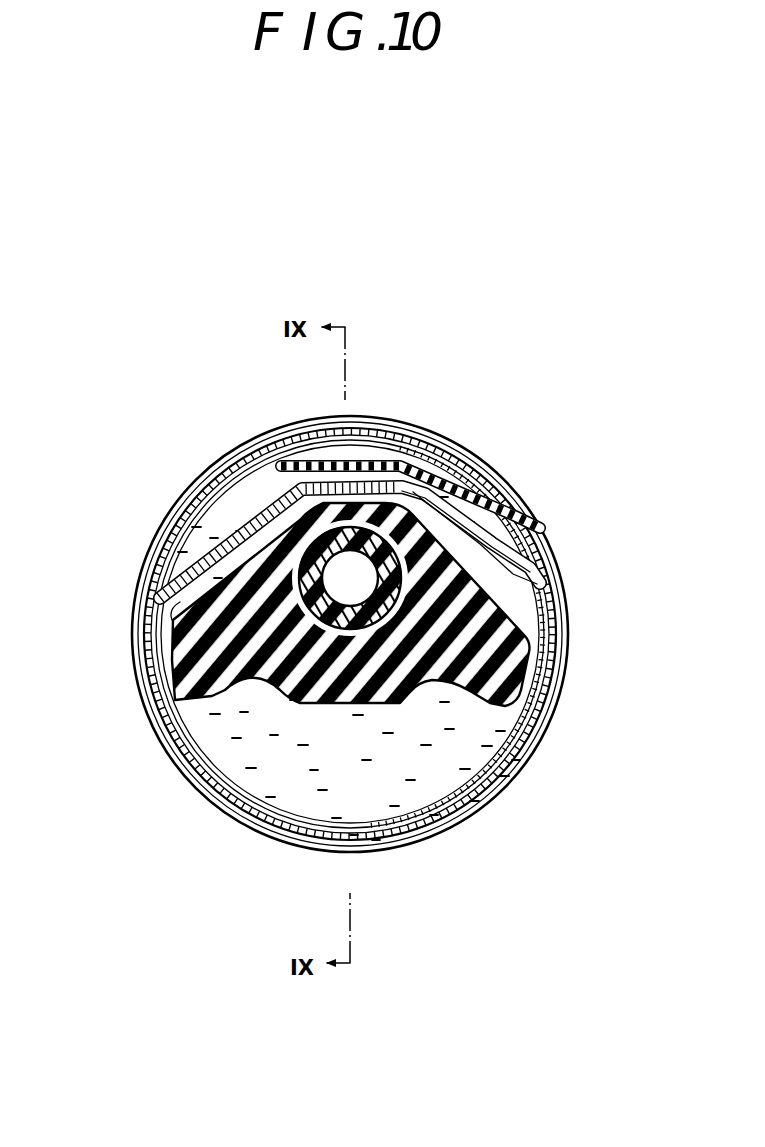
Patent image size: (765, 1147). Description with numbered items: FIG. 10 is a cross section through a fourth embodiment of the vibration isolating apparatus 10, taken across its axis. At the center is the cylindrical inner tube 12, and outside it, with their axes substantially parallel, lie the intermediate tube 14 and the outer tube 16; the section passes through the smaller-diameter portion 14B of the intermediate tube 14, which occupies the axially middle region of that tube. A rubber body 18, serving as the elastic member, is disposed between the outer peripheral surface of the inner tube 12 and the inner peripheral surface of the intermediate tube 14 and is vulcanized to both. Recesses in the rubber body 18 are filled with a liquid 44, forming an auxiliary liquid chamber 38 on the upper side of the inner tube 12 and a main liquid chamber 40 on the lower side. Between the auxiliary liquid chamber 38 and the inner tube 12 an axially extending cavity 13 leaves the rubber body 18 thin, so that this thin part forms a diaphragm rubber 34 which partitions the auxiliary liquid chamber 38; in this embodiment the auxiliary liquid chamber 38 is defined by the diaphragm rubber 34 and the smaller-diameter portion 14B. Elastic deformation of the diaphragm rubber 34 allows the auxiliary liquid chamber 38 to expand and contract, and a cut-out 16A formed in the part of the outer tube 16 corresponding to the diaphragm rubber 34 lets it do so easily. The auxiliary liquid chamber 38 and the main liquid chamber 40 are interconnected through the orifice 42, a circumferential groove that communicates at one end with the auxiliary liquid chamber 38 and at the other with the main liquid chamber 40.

The vibration isolating apparatus 10 is at (492, 333).
The inner tube 12 is at (343, 628).
The cavity 13 is at (192, 604).
The intermediate tube 14 is at (491, 557).
The smaller-diameter portion 14B is at (455, 516).
The outer tube 16 is at (567, 628).
The cut-out 16A is at (177, 598).
The rubber body 18 is at (521, 711).
The diaphragm rubber 34 is at (290, 458).
The auxiliary liquid chamber 38 is at (214, 526).
The main liquid chamber 40 is at (420, 762).
The orifice 42 is at (232, 802).
The liquid 44 is at (538, 543).